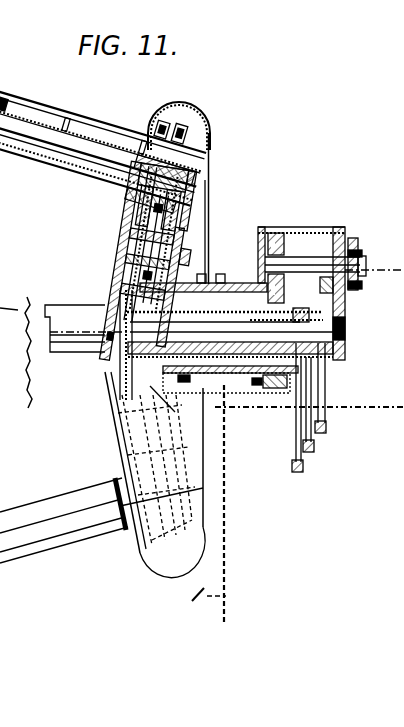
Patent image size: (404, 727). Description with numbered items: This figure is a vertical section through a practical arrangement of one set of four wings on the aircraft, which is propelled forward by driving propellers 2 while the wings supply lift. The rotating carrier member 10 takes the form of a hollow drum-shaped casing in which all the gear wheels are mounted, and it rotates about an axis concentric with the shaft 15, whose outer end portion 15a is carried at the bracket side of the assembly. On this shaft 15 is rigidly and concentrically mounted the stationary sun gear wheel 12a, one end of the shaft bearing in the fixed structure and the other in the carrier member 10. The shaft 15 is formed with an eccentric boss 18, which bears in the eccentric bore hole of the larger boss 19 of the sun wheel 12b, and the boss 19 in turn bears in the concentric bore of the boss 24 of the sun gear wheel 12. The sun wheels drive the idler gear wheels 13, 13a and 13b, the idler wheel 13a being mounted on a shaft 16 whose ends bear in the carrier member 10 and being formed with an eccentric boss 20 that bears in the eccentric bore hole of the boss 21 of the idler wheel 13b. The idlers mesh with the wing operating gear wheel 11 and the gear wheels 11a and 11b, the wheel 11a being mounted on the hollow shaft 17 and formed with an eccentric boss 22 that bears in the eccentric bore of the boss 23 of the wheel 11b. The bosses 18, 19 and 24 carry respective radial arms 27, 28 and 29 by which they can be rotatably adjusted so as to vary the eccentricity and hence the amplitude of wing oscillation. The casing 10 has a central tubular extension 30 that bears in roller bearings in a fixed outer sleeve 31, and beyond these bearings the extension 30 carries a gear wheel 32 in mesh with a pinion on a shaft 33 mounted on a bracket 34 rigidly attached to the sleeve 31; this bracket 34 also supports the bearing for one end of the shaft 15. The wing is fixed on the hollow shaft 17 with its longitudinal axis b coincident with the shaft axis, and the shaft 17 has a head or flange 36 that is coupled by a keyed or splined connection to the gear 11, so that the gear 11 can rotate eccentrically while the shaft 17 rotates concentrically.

The driving propeller 2 is at (33, 347).
The rotating carrier member 10 is at (118, 214).
The wing operating gear wheel 11 is at (206, 118).
The gear wheel 11a is at (168, 126).
The gear wheel 11b is at (177, 122).
The stationary sun gear wheel 12 is at (106, 300).
The stationary sun gear wheel 12a is at (112, 270).
The stationary sun gear wheel 12b is at (110, 285).
The idler gear wheel 13 is at (188, 232).
The idler gear wheel 13a is at (127, 203).
The idler gear wheel 13b is at (123, 210).
The shaft 15 is at (100, 340).
The shaft end nut 15a is at (392, 337).
The shaft 16 is at (118, 238).
The hollow shaft 17 is at (97, 133).
The eccentric boss 18 is at (290, 327).
The boss 19 is at (236, 364).
The eccentric boss 20 is at (178, 239).
The boss 21 is at (118, 248).
The eccentric boss 22 is at (212, 160).
The boss 23 is at (165, 164).
The boss 24 is at (256, 385).
The radial arm 27 is at (318, 372).
The radial arm 28 is at (314, 446).
The radial arm 29 is at (302, 470).
The central tubular extension 30 is at (228, 293).
The fixed outer sleeve 31 is at (222, 420).
The gear wheel 32 is at (285, 384).
The shaft 33 is at (308, 262).
The bracket 34 is at (344, 301).
The head or flange 36 is at (210, 137).
The longitudinal axis b is at (207, 182).